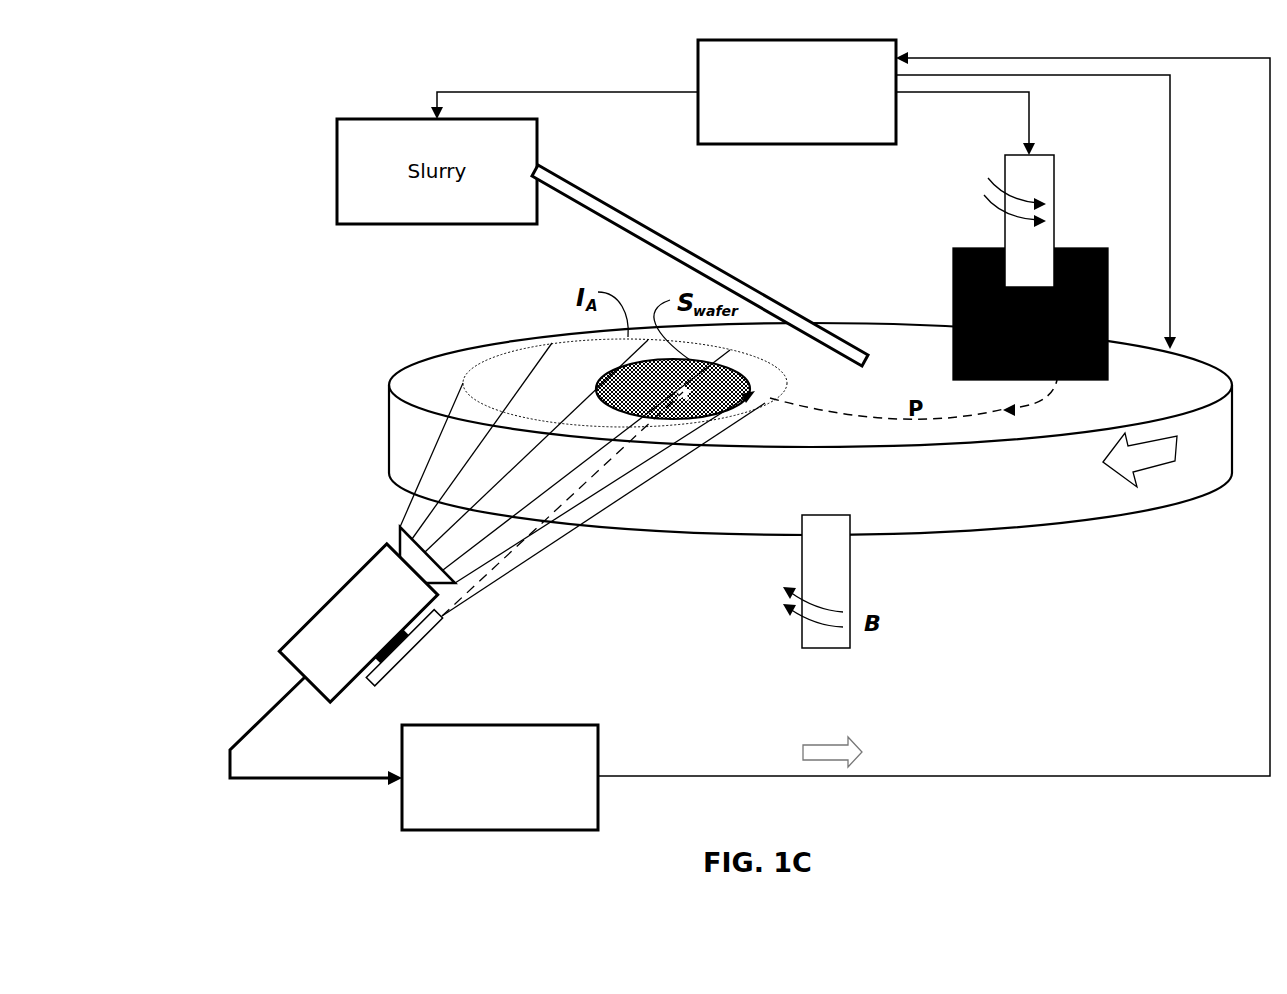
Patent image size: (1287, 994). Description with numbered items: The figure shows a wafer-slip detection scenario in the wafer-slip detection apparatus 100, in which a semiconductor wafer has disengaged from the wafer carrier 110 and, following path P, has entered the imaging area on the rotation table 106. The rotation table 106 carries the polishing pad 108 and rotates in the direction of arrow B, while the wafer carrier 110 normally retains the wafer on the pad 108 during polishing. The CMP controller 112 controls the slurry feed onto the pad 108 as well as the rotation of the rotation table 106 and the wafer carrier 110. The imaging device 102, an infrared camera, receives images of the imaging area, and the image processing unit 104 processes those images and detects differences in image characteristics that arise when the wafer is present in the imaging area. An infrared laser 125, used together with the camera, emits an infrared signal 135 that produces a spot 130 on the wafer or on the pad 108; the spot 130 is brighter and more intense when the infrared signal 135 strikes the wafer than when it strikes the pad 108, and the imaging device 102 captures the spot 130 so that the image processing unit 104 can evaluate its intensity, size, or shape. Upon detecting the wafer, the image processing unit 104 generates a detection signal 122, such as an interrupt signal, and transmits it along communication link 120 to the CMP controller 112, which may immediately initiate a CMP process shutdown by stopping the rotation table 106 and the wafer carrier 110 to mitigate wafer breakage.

The wafer-slip detection apparatus 100 is at (232, 92).
The imaging device 102 is at (299, 648).
The image processing unit 104 is at (500, 724).
The rotation table 106 is at (380, 441).
The polishing pad 108 is at (1034, 332).
The wafer carrier 110 is at (1077, 238).
The CMP controller 112 is at (742, 128).
The communication link 120 is at (716, 776).
The detection signal 122 is at (807, 748).
The infrared laser 125 is at (429, 629).
The spot 130 is at (681, 390).
The infrared signal 135 is at (603, 470).